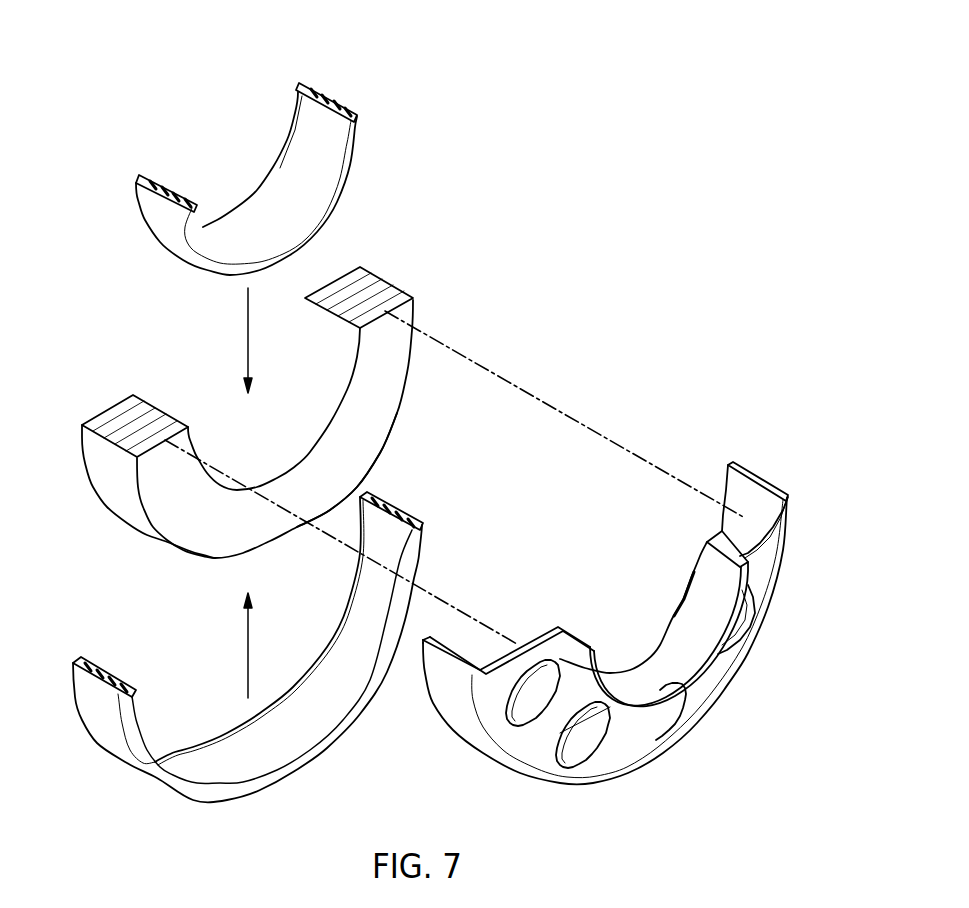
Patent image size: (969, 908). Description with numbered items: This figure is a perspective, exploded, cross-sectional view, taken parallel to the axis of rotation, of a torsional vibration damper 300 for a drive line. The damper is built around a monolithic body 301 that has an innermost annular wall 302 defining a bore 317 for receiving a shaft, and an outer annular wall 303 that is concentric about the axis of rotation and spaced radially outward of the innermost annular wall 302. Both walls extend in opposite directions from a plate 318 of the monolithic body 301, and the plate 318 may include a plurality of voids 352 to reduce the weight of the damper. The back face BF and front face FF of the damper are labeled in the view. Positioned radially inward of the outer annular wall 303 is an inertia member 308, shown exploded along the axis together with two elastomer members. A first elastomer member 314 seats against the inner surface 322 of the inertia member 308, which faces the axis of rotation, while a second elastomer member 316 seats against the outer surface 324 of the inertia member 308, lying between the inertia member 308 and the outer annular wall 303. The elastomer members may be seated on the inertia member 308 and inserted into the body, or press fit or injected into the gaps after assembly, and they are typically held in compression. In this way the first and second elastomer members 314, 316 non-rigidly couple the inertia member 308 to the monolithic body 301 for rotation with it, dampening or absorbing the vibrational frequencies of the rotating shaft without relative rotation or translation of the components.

The torsional vibration damper 300 is at (614, 436).
The monolithic body 301 is at (763, 488).
The innermost annular wall 302 is at (759, 623).
The outer annular wall 303 is at (754, 459).
The inertia member 308 is at (267, 396).
The first elastomer member 314 is at (276, 179).
The second elastomer member 316 is at (248, 658).
The bore 317 is at (654, 602).
The plate 318 is at (605, 657).
The inner surface of the inertia member 322 is at (327, 420).
The outer surface of the inertia member 324 is at (363, 281).
The voids 352 is at (596, 732).
The back face BF is at (596, 582).
The front face FF is at (720, 774).